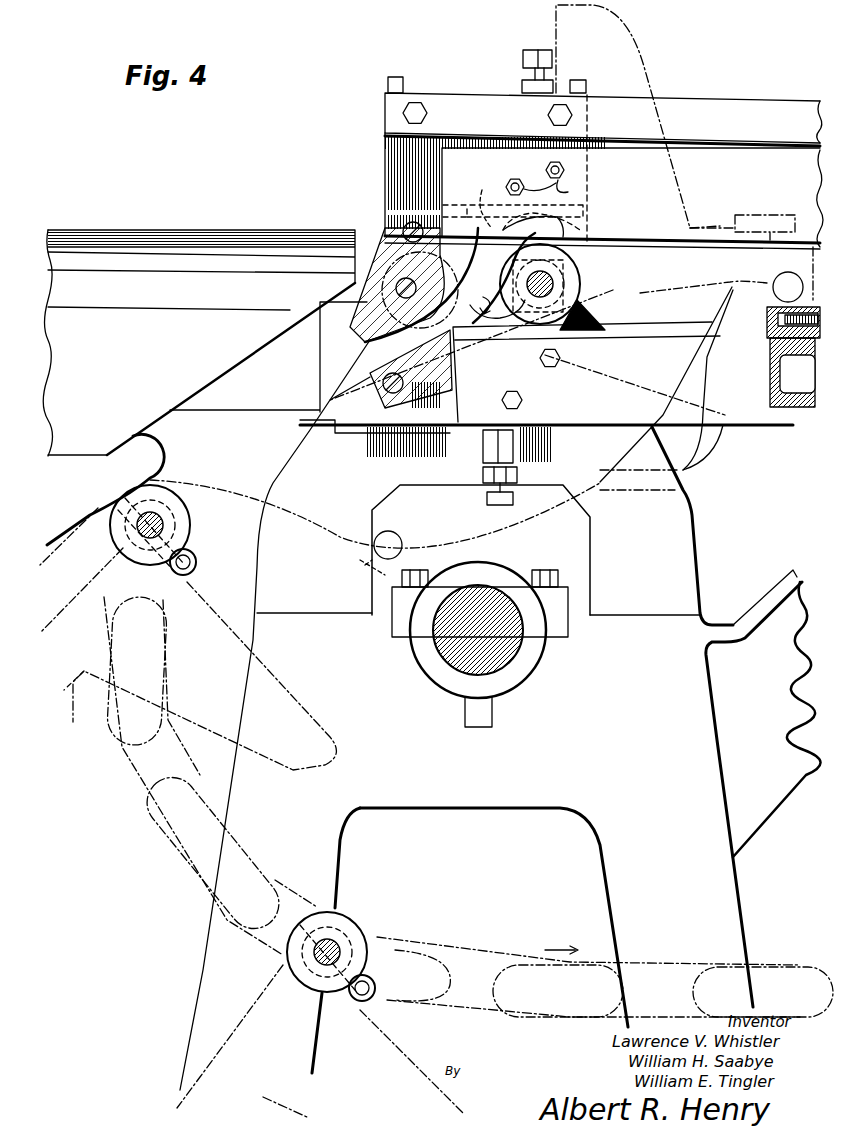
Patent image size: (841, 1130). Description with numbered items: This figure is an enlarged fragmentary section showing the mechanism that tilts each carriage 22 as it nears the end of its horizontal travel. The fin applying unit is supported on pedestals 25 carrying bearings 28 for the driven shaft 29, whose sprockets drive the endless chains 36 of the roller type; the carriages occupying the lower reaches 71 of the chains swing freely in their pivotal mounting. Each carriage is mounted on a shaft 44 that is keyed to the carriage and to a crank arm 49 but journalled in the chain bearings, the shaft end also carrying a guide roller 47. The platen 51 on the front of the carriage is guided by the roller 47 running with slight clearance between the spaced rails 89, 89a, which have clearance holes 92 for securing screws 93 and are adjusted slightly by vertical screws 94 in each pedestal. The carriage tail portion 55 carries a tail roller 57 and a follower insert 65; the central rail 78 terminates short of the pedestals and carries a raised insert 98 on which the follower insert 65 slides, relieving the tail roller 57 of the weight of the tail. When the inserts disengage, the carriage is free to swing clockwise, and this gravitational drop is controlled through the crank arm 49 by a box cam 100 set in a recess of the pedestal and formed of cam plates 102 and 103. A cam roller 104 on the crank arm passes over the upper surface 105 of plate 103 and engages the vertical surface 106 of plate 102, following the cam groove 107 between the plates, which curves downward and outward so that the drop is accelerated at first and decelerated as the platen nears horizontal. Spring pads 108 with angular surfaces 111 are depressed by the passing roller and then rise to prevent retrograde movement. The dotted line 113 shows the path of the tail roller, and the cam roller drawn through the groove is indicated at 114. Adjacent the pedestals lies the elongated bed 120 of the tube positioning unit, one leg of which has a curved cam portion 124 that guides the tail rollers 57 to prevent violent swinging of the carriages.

The carriage 22 is at (640, 44).
The pedestal 25 is at (404, 715).
The bearing 28 is at (525, 655).
The driven shaft 29 is at (495, 665).
The endless chain 36 is at (185, 874).
The shaft 44 is at (555, 287).
The guide roller 47 is at (565, 268).
The crank arm 49 is at (600, 282).
The platen 51 is at (556, 23).
The tail portion 55 is at (722, 296).
The roller 57 is at (795, 287).
The follower insert 65 is at (790, 275).
The lower reach 71 is at (785, 968).
The central rail 78 is at (776, 377).
The rail 89 is at (604, 163).
The rail 89a is at (546, 392).
The clearance hole 92 is at (567, 178).
The securing screw 93 is at (568, 192).
The vertical screw 94 is at (523, 60).
The raised insert 98 is at (770, 332).
The box cam 100 is at (367, 340).
The cam plate 102 is at (390, 252).
The cam plate 103 is at (333, 420).
The cam roller 104 is at (583, 232).
The upper surface 105 is at (660, 247).
The vertical surface 106 is at (470, 217).
The cam groove 107 is at (420, 302).
The spring pad 108 is at (490, 195).
The angular surface 111 is at (583, 212).
The dotted line 113 is at (686, 492).
The cam roller path indication 114 is at (494, 299).
The elongated bed 120 is at (199, 343).
The curved cam portion 124 is at (105, 489).